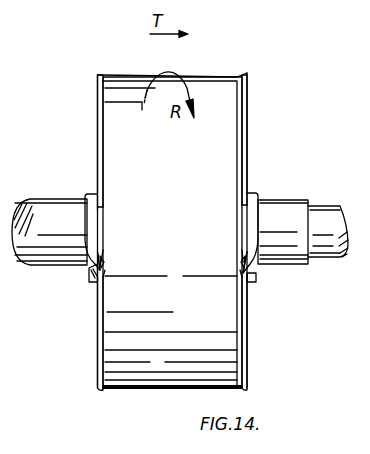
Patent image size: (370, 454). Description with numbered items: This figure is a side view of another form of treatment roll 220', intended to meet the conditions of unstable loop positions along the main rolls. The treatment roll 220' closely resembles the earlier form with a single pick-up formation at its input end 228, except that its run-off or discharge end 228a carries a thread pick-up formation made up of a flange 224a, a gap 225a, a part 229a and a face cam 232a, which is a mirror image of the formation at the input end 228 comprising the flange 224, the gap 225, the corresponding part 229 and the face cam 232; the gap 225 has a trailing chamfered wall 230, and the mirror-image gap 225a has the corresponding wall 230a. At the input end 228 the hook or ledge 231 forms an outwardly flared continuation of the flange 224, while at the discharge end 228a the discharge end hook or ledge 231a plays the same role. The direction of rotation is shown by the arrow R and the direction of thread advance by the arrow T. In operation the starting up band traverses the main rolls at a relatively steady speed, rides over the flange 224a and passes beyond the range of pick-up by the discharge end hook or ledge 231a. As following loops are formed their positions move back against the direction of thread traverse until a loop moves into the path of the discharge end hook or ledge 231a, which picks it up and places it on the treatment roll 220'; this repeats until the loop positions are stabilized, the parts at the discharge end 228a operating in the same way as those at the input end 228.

The treatment roll 220' is at (171, 215).
The flange 224 is at (97, 73).
The flange 224a is at (246, 73).
The input end 228 is at (97, 332).
The run-off or discharge end 228a is at (248, 332).
The left fold line 229 is at (107, 270).
The pick-up formation part 229a is at (242, 268).
The trailing chamfered wall 230 is at (102, 252).
The right jaw 230a is at (240, 262).
The gap 225 is at (103, 261).
The gap 225a is at (242, 262).
The left block 231 is at (90, 276).
The discharge end hook or ledge 231a is at (254, 278).
The face cam 232 is at (84, 228).
The face cam 232a is at (257, 222).